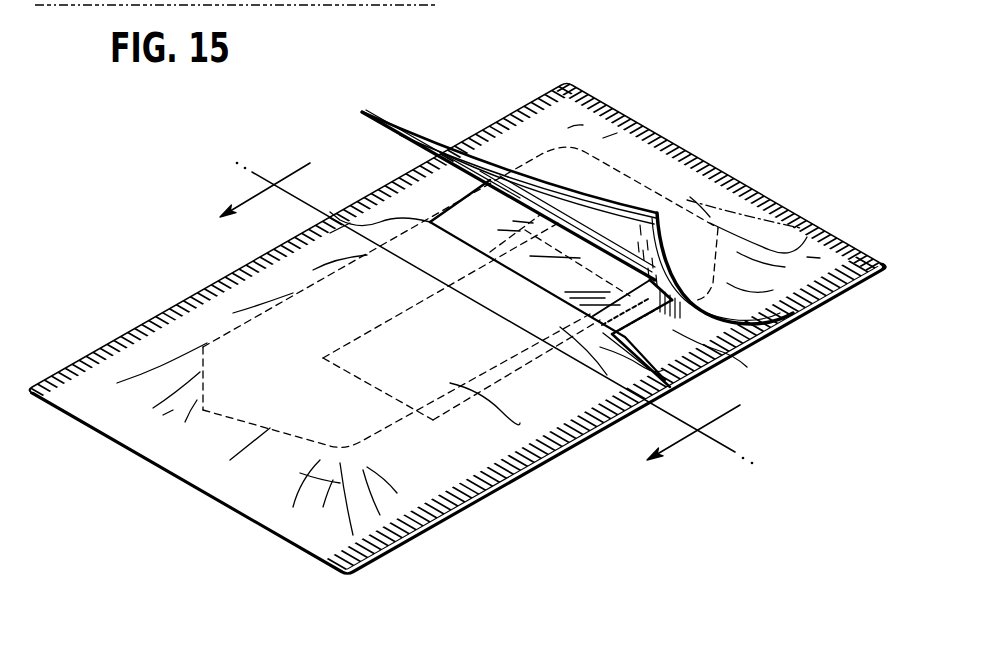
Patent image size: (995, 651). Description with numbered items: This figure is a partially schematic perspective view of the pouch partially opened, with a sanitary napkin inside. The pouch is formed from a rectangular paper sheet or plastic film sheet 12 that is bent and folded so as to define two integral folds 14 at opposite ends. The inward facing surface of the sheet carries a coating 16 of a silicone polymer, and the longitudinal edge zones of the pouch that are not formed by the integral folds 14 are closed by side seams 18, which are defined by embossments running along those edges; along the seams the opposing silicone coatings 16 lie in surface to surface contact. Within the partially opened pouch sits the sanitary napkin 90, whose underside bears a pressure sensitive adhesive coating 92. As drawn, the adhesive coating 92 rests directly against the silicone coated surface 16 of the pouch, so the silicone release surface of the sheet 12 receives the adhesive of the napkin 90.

The paper sheet or plastic film sheet 12 is at (667, 177).
The integral folds 14 is at (792, 210).
The silicone polymer coating 16 is at (763, 365).
The side seams 18 is at (517, 113).
The sanitary napkin 90 is at (503, 232).
The pressure sensitive adhesive coating 92 is at (350, 342).